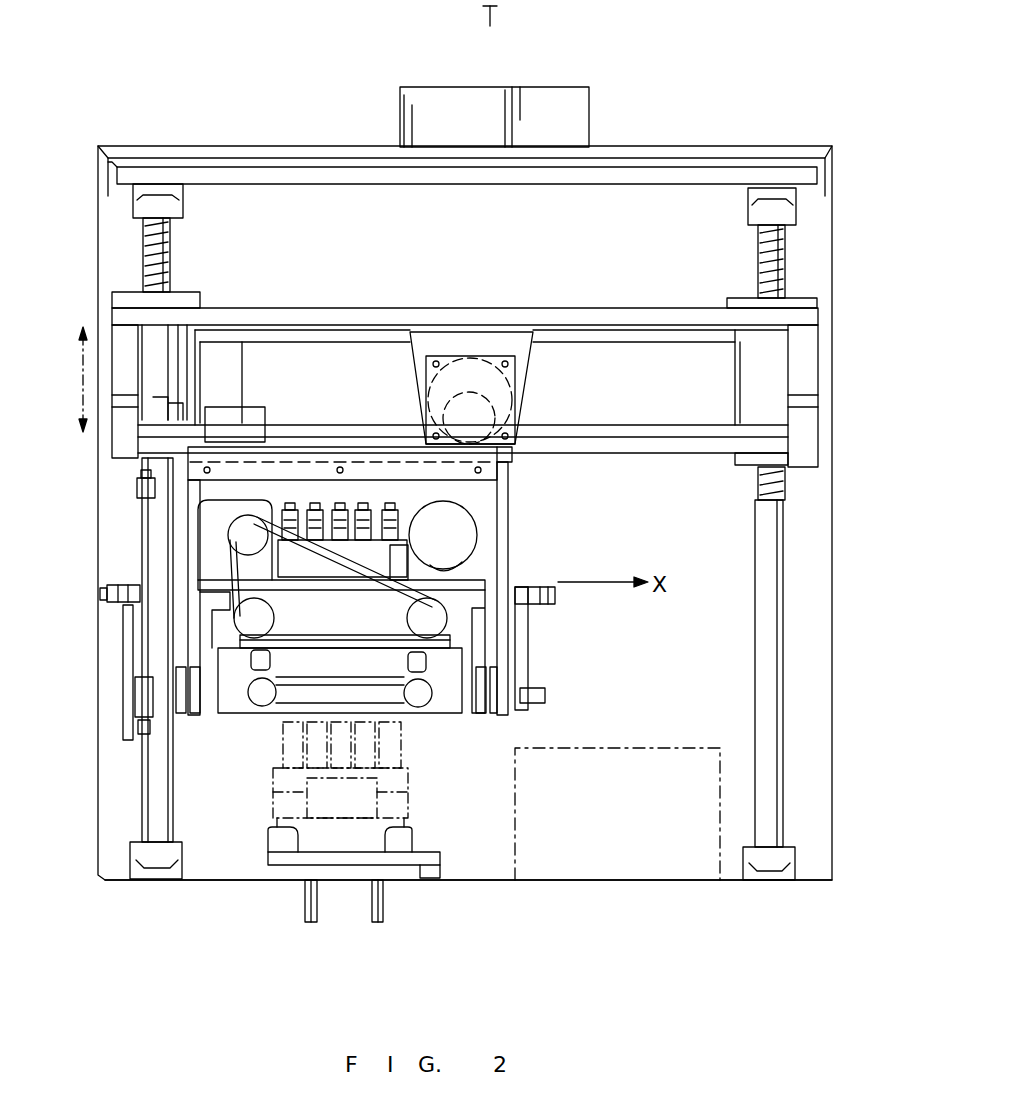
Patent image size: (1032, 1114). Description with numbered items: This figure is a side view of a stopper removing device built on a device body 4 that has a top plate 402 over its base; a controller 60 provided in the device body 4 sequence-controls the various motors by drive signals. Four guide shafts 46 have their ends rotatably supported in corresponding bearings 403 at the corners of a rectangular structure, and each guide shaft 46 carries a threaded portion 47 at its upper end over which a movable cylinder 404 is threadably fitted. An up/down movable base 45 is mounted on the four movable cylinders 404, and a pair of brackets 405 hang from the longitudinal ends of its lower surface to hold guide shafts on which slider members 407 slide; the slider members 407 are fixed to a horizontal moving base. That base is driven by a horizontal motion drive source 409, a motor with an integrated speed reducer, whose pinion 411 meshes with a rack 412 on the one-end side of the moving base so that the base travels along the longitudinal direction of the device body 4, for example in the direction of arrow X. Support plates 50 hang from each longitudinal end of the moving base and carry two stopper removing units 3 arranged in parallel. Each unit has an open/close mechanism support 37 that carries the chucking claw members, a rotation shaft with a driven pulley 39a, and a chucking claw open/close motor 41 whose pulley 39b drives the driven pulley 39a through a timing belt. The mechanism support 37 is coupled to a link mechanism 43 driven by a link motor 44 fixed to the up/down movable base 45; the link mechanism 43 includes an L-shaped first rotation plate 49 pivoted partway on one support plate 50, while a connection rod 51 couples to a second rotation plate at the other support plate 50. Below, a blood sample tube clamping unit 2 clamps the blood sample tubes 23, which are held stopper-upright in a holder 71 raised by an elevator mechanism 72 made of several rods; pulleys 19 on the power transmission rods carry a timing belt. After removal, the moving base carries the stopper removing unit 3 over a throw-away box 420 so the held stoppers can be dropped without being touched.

The controller 60 is at (540, 100).
The top plate 402 is at (712, 180).
The guide shaft 46 is at (133, 227).
The bearing 403 is at (183, 202).
The threaded portion 47 is at (143, 255).
The up/down movable base 45 is at (112, 316).
The link motor 44 is at (320, 348).
The horizontal motion drive source 409 is at (472, 372).
The pinion 411 is at (495, 408).
The rack 412 is at (515, 455).
The bracket 405 is at (810, 356).
The movable cylinder 404 is at (790, 385).
The slider member 407 is at (265, 412).
The support plate 50 is at (178, 520).
The stopper removing unit 3 is at (527, 532).
The chucking claw open/close motor 41 is at (262, 512).
The pulley 39b is at (230, 538).
The driven pulley 39a is at (440, 625).
The open/close mechanism support 37 is at (455, 562).
The link mechanism 43 is at (142, 570).
The connection rod 51 is at (105, 594).
The first rotation plate 49 is at (123, 660).
The pulley 19 is at (264, 698).
The blood sample tube clamping unit 2 is at (425, 740).
The blood sample tube 23 is at (275, 766).
The holder 71 is at (360, 790).
The device body 4 is at (118, 870).
The elevator mechanism 72 is at (305, 908).
The throw-away box 420 is at (650, 880).